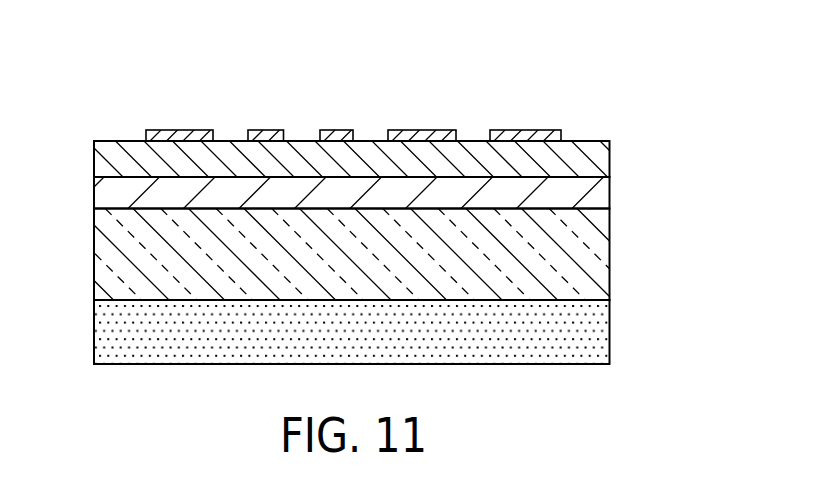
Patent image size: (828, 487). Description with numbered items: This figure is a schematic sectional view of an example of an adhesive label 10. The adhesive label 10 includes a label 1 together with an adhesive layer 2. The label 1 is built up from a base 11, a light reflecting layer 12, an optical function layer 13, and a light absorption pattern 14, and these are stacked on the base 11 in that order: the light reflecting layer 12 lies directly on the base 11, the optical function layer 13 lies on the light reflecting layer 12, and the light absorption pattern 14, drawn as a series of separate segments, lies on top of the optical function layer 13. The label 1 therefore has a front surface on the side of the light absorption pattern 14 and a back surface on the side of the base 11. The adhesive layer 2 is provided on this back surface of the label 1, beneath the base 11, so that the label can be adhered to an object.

The label 1 is at (343, 180).
The adhesive layer 2 is at (602, 335).
The adhesive label 10 is at (343, 192).
The base 11 is at (602, 248).
The light reflecting layer 12 is at (602, 193).
The optical function layer 13 is at (602, 158).
The light absorption pattern 14 is at (175, 128).